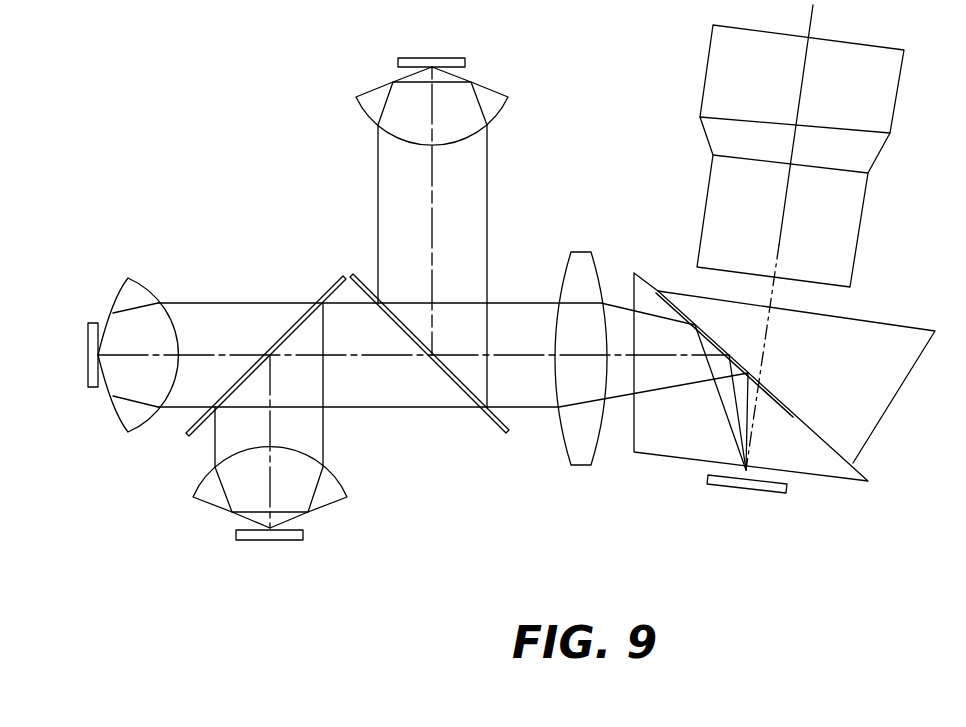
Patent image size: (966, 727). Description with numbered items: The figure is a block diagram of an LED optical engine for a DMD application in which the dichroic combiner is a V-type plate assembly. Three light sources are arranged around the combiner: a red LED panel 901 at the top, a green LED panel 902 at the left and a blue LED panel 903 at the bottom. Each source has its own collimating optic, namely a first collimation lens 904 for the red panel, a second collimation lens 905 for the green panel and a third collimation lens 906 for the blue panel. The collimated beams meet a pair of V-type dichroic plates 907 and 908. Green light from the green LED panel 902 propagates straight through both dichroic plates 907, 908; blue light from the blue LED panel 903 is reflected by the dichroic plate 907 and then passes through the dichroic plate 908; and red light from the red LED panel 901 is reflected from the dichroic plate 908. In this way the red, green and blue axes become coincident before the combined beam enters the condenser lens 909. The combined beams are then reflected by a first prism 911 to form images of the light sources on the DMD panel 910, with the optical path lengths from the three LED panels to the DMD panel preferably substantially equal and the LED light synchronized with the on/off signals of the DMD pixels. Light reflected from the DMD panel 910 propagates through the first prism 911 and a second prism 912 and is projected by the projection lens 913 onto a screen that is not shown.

The red LED panel 901 is at (407, 57).
The green LED panel 902 is at (89, 322).
The blue LED panel 903 is at (243, 541).
The first collimation lens 904 is at (380, 92).
The second collimation lens 905 is at (134, 291).
The third collimation lens 906 is at (328, 486).
The dichroic plate 907 is at (337, 282).
The dichroic plate 908 is at (489, 430).
The condenser lens 909 is at (578, 252).
The DMD panel 910 is at (762, 493).
The first prism 911 is at (645, 443).
The second prism 912 is at (892, 328).
The projection lens 913 is at (715, 90).